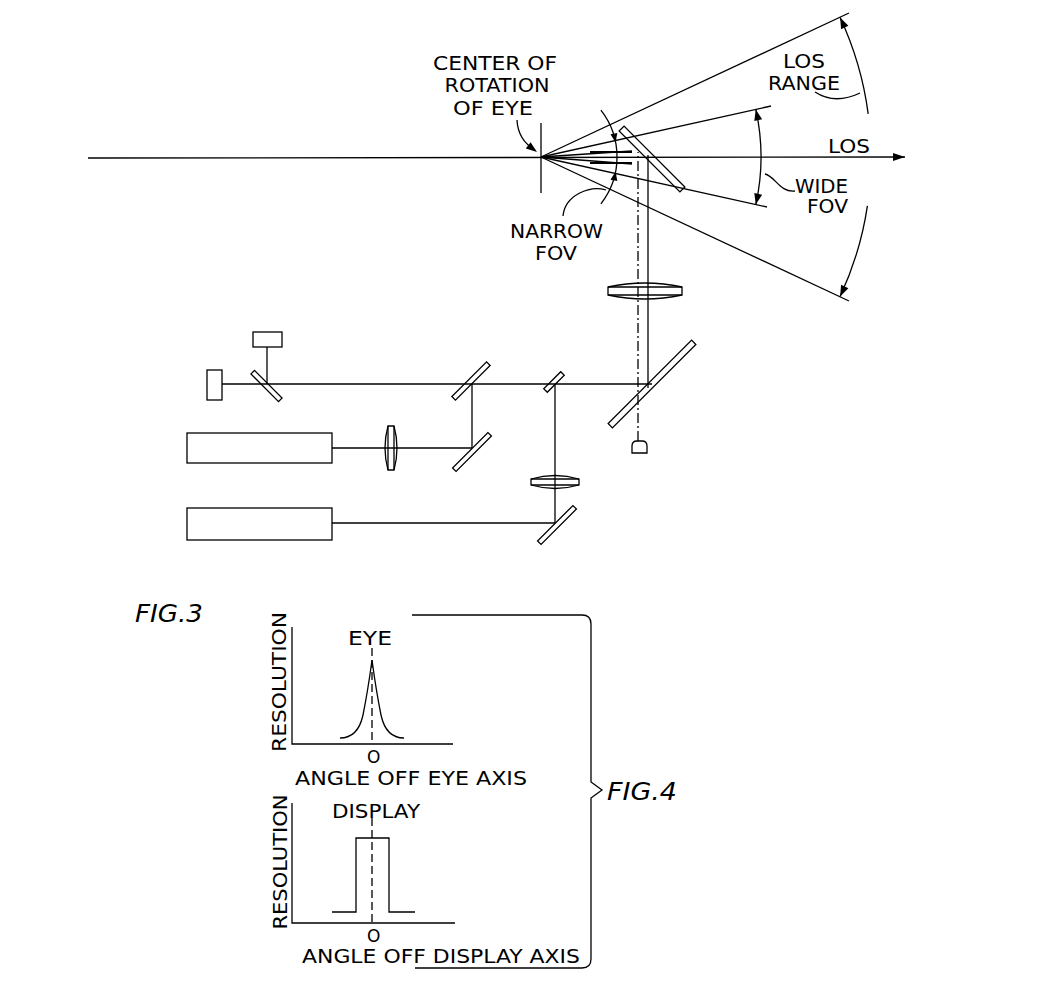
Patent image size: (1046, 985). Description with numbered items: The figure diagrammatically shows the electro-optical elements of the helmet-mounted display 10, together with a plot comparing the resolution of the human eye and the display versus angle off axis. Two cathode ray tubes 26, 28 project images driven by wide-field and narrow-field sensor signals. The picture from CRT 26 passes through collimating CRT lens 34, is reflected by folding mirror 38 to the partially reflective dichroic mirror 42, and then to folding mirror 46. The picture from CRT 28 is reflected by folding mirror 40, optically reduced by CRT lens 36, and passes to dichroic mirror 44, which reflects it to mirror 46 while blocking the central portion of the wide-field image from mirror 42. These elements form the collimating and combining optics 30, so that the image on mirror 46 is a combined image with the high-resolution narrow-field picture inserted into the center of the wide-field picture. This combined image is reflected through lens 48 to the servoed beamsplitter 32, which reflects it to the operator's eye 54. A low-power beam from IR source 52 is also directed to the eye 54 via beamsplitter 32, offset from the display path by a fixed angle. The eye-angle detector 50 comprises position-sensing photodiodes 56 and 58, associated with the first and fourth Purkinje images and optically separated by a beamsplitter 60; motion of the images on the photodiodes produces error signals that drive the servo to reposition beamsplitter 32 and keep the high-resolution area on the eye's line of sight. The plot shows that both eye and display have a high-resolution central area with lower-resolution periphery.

The helmet-mounted display 10 is at (322, 112).
The cathode ray tube 26 is at (187, 448).
The cathode ray tube 28 is at (187, 524).
The collimating and combining optics 30 is at (502, 316).
The servoed beamsplitter 32 is at (632, 124).
The CRT lens 34 is at (390, 472).
The CRT lens 36 is at (531, 483).
The folding mirror 38 is at (490, 440).
The folding mirror 40 is at (572, 518).
The dichroic mirror 42 is at (468, 366).
The dichroic mirror 44 is at (560, 373).
The folding mirror 46 is at (692, 342).
The lens 48 is at (683, 291).
The eye-angle detector 50 is at (228, 345).
The IR source 52 is at (640, 455).
The operator's eye 54 is at (533, 164).
The photodiode 56 is at (277, 332).
The photodiode 58 is at (207, 388).
The beamsplitter 60 is at (283, 395).